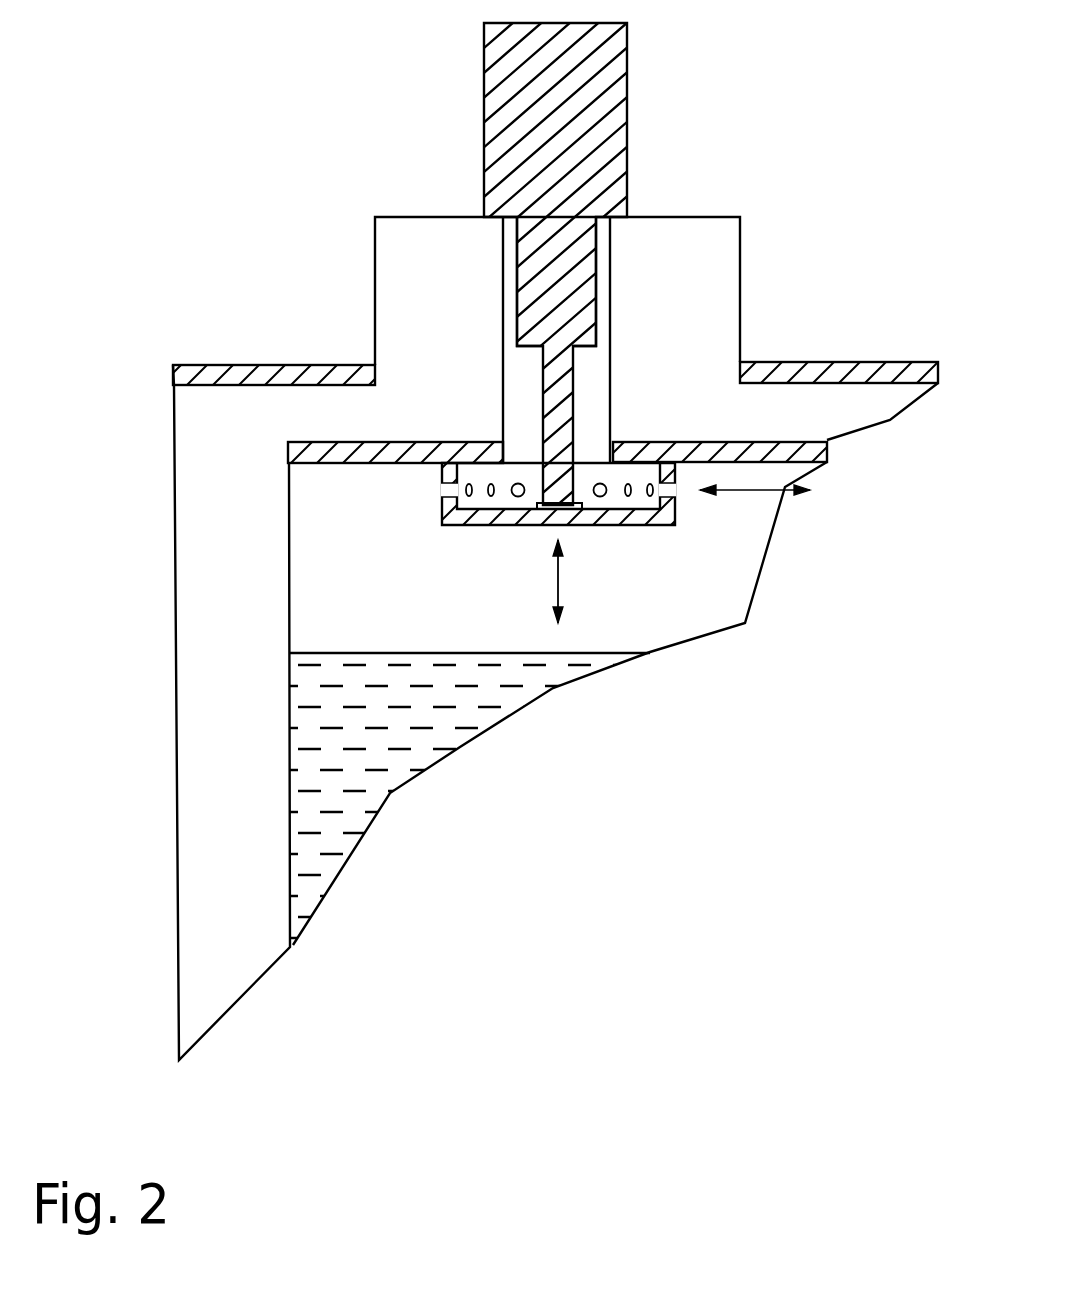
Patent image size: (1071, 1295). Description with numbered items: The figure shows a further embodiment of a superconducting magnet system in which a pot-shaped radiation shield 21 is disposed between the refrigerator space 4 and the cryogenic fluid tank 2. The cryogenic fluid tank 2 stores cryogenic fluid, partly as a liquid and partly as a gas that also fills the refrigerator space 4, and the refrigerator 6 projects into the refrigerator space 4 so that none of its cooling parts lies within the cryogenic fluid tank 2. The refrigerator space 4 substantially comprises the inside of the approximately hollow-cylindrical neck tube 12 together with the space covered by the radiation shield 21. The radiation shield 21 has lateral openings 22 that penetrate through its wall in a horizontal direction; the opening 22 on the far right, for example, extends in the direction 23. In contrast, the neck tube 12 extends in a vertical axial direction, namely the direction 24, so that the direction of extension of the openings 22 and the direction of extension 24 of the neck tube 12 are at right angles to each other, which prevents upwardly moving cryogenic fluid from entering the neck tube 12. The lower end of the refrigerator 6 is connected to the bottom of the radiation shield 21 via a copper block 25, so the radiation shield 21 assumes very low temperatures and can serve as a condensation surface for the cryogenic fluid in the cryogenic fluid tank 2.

The cryogenic fluid tank 2 is at (322, 570).
The refrigerator space 4 is at (595, 382).
The refrigerator 6 is at (603, 92).
The neck tube 12 is at (500, 360).
The pot-shaped radiation shield 21 is at (610, 523).
The lateral openings 22 is at (675, 490).
The direction 23 is at (755, 478).
The direction 24 is at (571, 581).
The copper block 25 is at (537, 512).